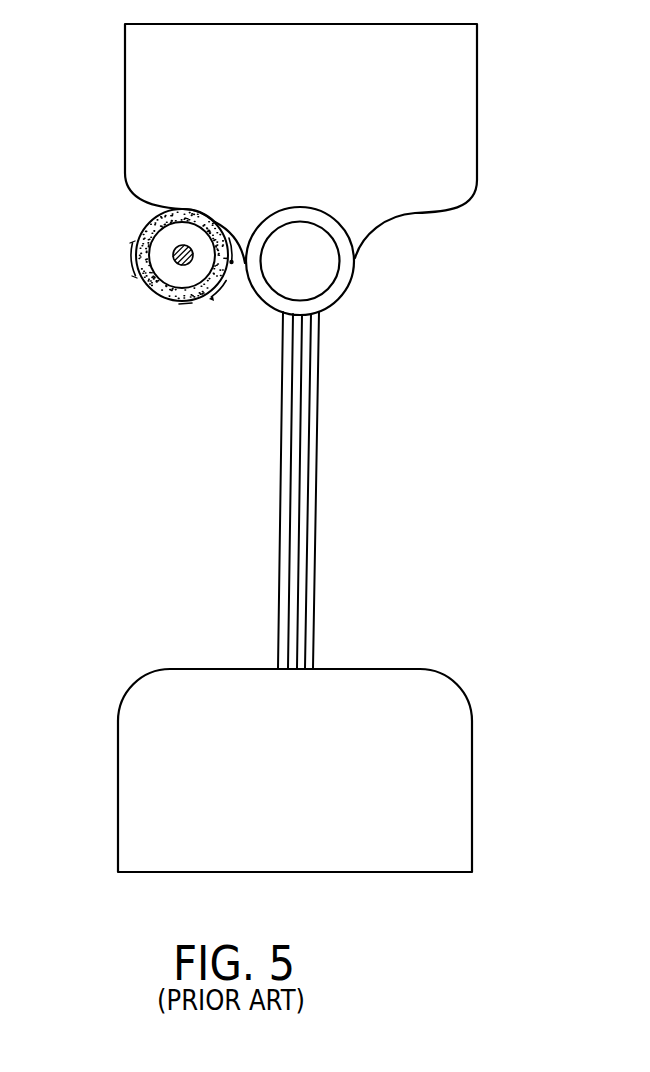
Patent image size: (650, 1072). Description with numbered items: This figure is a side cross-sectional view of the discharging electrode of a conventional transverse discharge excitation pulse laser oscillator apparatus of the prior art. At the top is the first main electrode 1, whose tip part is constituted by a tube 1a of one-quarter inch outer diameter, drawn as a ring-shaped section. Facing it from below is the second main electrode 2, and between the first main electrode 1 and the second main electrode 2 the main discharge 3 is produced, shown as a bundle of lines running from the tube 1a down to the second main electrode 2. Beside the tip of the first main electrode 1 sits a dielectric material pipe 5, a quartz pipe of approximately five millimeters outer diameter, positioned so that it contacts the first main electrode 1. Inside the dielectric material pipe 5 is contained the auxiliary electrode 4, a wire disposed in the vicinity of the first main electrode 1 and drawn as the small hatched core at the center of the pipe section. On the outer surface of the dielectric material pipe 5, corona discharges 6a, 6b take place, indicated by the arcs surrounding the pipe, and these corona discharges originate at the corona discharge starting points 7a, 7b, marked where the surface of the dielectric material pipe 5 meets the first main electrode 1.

The first main electrode 1 is at (450, 125).
The tube 1a is at (343, 282).
The second main electrode 2 is at (460, 775).
The main discharge 3 is at (305, 533).
The auxiliary electrode 4 is at (175, 248).
The dielectric material pipe 5 is at (147, 278).
The corona discharge 6a is at (192, 304).
The corona discharge 6b is at (131, 257).
The corona discharge starting point 7a is at (215, 220).
The corona discharge starting point 7b is at (182, 209).